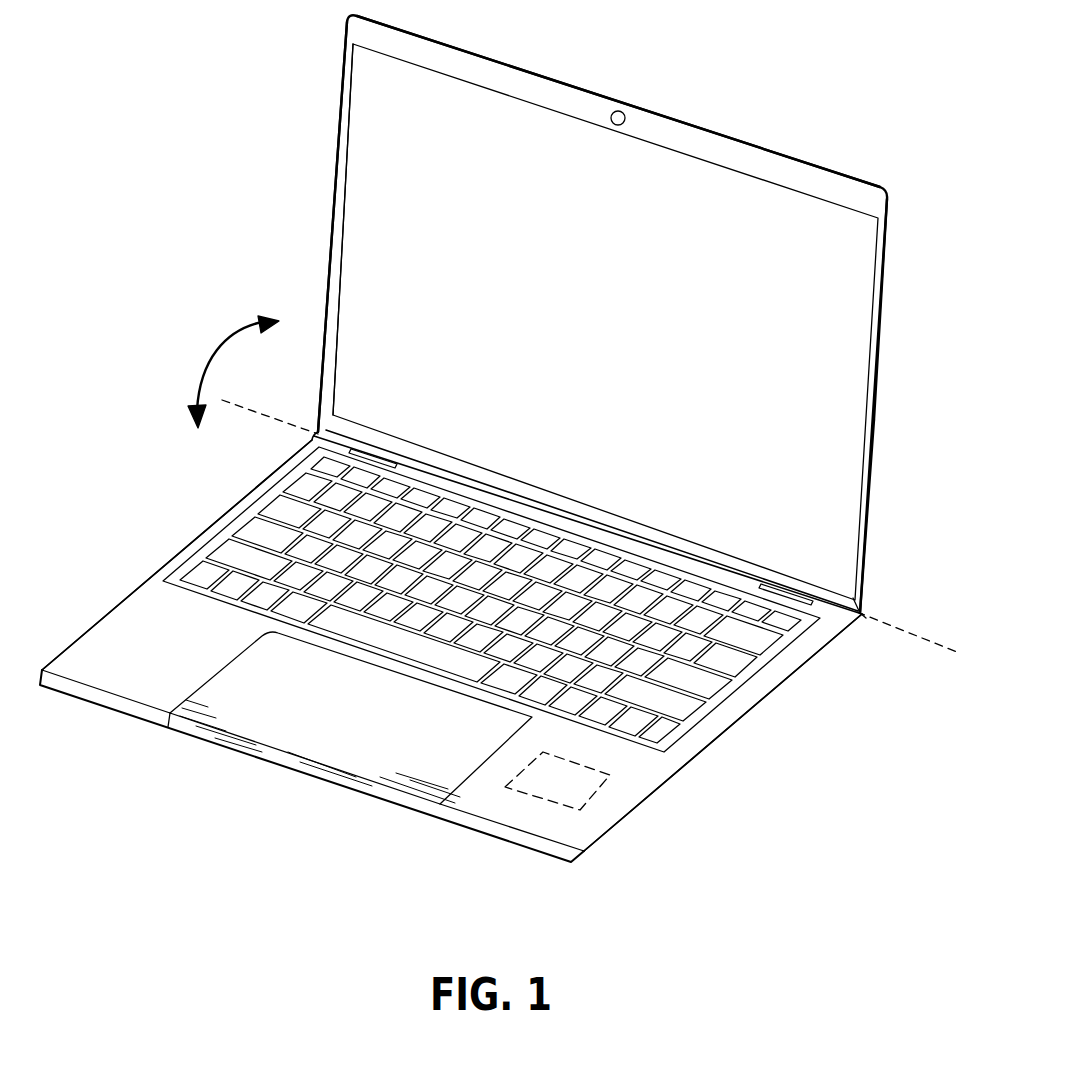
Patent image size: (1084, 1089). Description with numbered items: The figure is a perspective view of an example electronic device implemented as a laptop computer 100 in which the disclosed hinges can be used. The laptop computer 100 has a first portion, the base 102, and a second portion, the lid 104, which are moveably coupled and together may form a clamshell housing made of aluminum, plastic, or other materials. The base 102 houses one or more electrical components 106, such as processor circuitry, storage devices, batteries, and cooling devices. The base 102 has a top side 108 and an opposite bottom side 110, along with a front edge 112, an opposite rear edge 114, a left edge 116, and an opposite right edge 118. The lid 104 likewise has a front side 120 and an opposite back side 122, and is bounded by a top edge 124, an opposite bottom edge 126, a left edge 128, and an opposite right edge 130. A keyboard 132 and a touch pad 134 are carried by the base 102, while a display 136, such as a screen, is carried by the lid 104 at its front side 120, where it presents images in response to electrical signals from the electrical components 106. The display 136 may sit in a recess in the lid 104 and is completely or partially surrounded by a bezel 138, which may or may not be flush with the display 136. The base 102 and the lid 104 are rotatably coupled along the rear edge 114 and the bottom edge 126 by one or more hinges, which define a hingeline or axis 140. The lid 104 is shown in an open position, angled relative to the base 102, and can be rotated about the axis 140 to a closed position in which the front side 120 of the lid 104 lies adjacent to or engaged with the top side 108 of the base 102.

The laptop computer 100 is at (497, 439).
The base 102 is at (470, 633).
The lid 104 is at (600, 314).
The electrical components 106 is at (614, 780).
The top side 108 is at (105, 642).
The bottom side 110 is at (92, 707).
The front edge 112 is at (462, 820).
The rear edge 114 is at (342, 432).
The left edge 116 is at (172, 552).
The right edge 118 is at (733, 718).
The front side 120 is at (337, 133).
The back side 122 is at (870, 505).
The top edge 124 is at (490, 58).
The bottom edge 126 is at (856, 616).
The left edge 128 is at (335, 183).
The right edge 130 is at (878, 366).
The keyboard 132 is at (272, 505).
The touch pad 134 is at (252, 680).
The display 136 is at (365, 240).
The bezel 138 is at (547, 92).
The hingeline or axis 140 is at (288, 426).